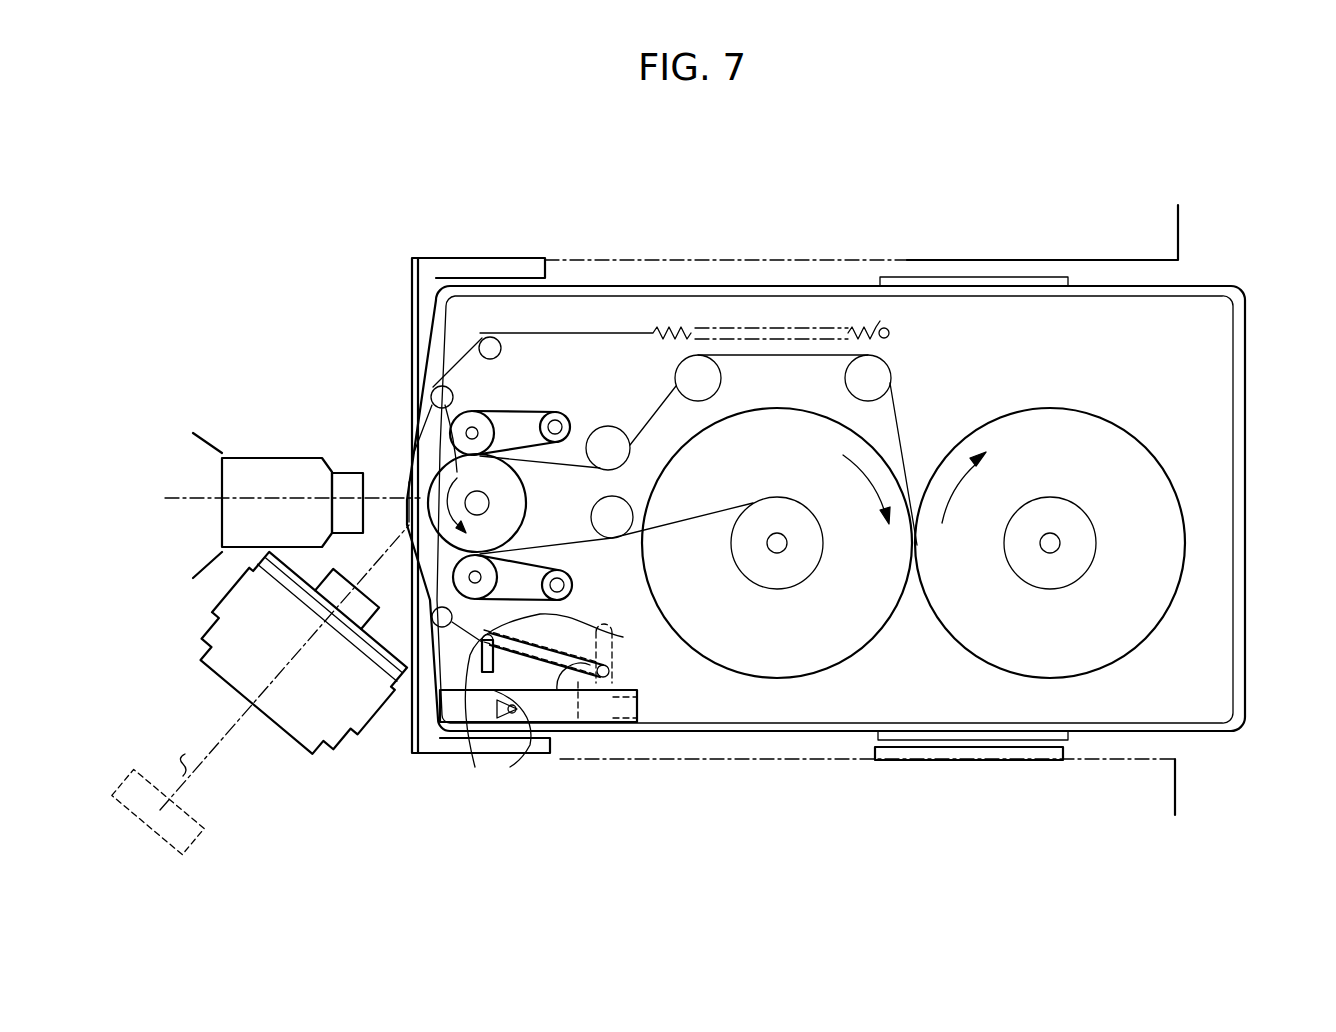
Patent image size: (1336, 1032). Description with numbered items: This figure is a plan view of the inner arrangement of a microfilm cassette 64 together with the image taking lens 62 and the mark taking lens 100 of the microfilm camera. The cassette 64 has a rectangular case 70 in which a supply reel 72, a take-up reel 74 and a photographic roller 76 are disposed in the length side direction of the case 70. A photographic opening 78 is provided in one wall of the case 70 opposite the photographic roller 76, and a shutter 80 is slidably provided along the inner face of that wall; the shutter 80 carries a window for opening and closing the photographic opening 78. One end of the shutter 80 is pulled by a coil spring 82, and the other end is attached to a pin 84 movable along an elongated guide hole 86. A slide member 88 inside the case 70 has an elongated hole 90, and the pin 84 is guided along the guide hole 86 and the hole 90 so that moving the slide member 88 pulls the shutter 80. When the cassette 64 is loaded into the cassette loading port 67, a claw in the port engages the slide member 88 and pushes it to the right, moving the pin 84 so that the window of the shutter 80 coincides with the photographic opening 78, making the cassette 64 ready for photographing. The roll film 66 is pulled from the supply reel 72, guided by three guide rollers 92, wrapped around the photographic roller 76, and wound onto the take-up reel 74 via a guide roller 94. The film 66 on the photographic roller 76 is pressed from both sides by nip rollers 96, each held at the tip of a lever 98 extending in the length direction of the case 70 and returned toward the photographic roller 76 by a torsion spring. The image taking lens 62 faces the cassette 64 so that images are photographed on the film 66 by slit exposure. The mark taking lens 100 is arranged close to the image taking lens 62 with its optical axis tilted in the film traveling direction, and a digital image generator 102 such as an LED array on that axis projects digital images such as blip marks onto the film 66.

The image taking lens 62 is at (272, 458).
The microfilm cassette 64 is at (1252, 712).
The microfilm 66 is at (903, 443).
The cassette loading port 67 is at (1178, 762).
The rectangular case 70 is at (1247, 432).
The supply reel 72 is at (1160, 472).
The take-up reel 74 is at (798, 680).
The photographic roller 76 is at (410, 470).
The photographic opening 78 is at (457, 473).
The shutter 80 is at (610, 426).
The coil spring 82 is at (797, 327).
The pin 84 is at (610, 640).
The elongated guide hole 86 is at (560, 690).
The slide member 88 is at (500, 690).
The elongated hole 90 is at (467, 745).
The guide roller 92 is at (678, 368).
The guide roller 94 is at (591, 510).
The nip roller 96 is at (502, 349).
The lever 98 is at (540, 418).
The mark taking lens 100 is at (340, 747).
The digital image generator 102 is at (203, 833).